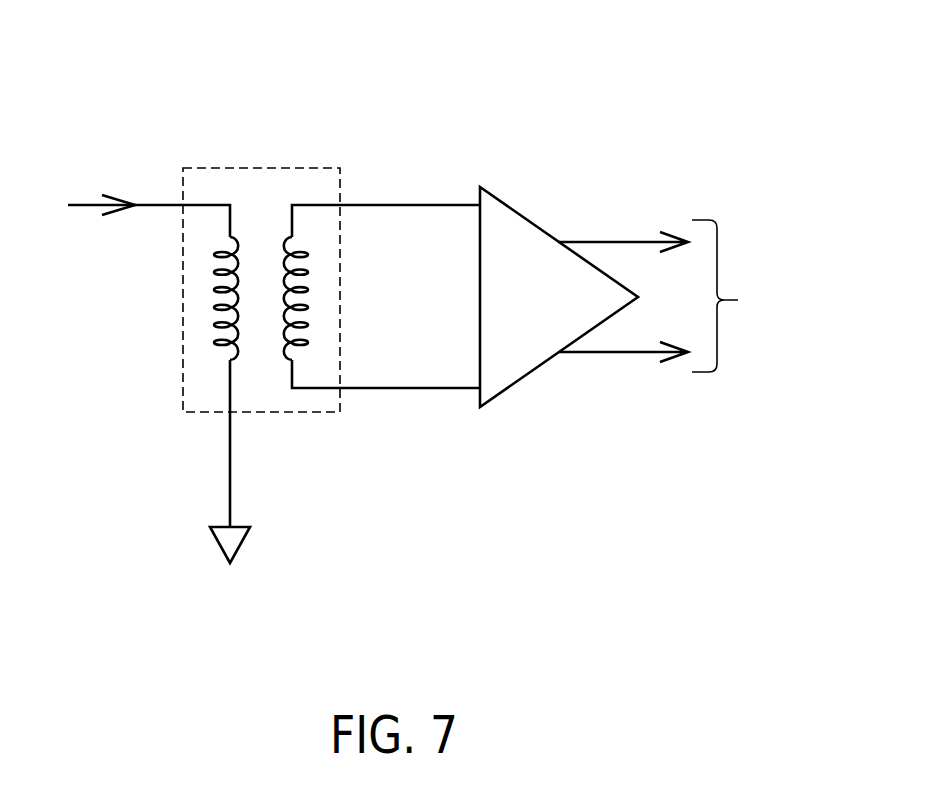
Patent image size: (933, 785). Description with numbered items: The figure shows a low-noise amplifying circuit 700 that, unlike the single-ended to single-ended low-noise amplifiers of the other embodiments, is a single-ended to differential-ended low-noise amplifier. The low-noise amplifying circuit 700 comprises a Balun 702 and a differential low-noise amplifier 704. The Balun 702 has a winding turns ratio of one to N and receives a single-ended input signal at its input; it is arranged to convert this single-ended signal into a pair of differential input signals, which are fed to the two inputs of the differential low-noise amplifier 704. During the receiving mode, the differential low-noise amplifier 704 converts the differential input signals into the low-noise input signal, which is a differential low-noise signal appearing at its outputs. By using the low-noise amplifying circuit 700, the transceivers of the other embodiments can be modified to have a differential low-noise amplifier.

The low-noise amplifying circuit 700 is at (790, 64).
The Balun 702 is at (313, 168).
The differential low-noise amplifier 704 is at (503, 200).